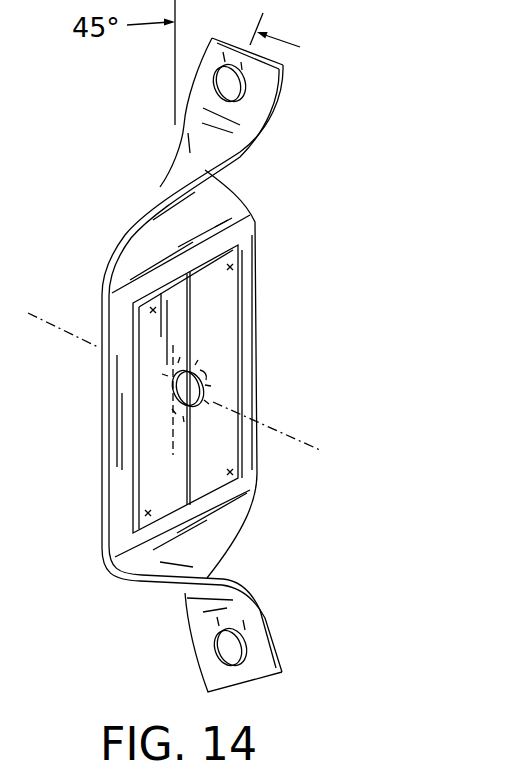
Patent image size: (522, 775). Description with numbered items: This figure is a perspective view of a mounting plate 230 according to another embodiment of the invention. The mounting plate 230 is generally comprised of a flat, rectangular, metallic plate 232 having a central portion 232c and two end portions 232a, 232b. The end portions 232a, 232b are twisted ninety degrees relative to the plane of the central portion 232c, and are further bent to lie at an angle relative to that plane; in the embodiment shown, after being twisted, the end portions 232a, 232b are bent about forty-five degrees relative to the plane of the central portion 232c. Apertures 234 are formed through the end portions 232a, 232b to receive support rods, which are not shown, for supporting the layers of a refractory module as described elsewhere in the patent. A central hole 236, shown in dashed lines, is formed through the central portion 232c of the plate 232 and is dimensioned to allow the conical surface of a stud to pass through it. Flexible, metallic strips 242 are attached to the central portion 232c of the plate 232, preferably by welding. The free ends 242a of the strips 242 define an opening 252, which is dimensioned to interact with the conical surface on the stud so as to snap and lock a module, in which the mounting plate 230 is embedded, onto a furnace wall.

The mounting plate 230 is at (316, 174).
The flat rectangular metallic plate 232 is at (260, 276).
The end portion 232a is at (260, 82).
The end portion 232b is at (270, 648).
The central portion 232c is at (252, 392).
The apertures 234 is at (232, 83).
The central hole 236 is at (162, 383).
The flexible metallic strips 242 is at (175, 318).
The free ends 242a is at (213, 381).
The opening 252 is at (207, 377).